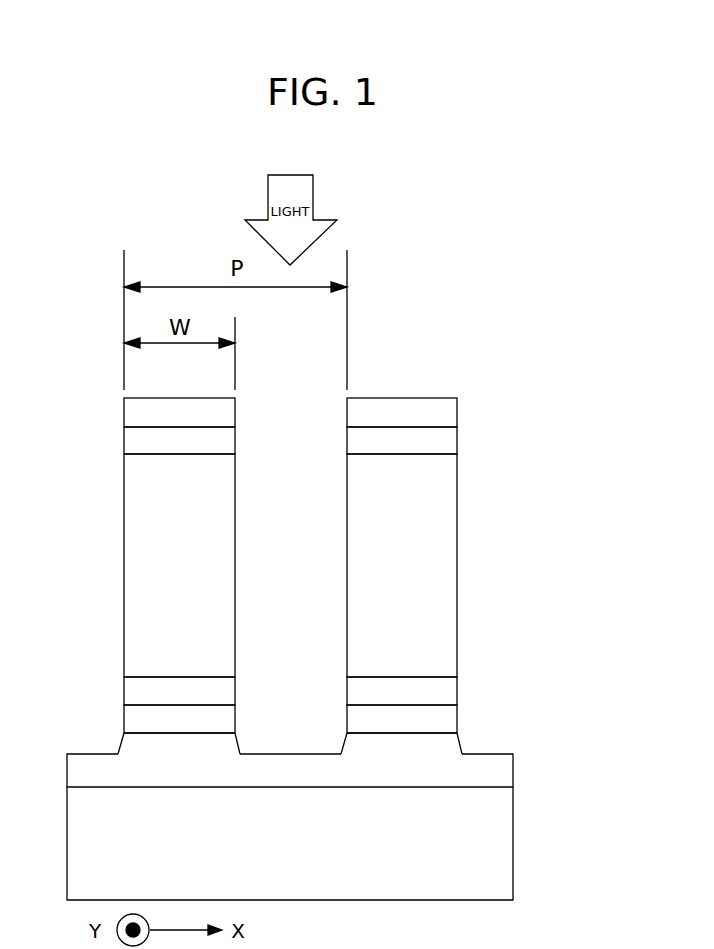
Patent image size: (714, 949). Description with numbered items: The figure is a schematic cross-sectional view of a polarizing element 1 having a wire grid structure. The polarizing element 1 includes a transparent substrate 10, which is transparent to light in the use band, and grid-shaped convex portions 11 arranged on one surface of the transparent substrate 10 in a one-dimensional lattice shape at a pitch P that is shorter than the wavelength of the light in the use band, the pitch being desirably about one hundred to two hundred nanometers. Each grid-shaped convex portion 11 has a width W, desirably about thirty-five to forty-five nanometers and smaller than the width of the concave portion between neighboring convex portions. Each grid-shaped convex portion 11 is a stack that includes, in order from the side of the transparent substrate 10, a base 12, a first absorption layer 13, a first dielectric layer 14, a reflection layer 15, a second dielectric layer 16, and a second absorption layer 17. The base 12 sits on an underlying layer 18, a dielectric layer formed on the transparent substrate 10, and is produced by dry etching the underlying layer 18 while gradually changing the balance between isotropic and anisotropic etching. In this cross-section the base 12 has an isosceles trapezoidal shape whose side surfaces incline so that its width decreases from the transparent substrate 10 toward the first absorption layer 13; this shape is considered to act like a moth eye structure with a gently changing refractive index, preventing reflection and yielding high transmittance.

The polarizing element 1 is at (324, 552).
The transparent substrate 10 is at (513, 842).
The grid-shaped convex portion 11 is at (349, 510).
The base 12 is at (460, 740).
The first absorption layer 13 is at (460, 716).
The first dielectric layer 14 is at (460, 690).
The reflection layer 15 is at (457, 556).
The second dielectric layer 16 is at (457, 440).
The second absorption layer 17 is at (457, 410).
The underlying layer 18 is at (513, 765).